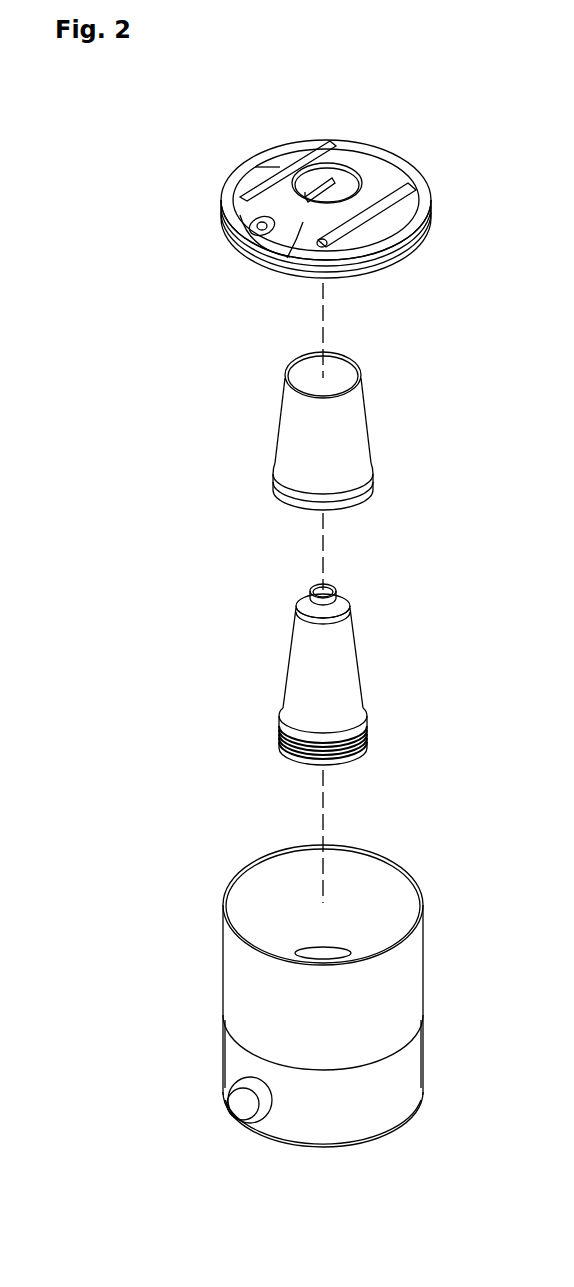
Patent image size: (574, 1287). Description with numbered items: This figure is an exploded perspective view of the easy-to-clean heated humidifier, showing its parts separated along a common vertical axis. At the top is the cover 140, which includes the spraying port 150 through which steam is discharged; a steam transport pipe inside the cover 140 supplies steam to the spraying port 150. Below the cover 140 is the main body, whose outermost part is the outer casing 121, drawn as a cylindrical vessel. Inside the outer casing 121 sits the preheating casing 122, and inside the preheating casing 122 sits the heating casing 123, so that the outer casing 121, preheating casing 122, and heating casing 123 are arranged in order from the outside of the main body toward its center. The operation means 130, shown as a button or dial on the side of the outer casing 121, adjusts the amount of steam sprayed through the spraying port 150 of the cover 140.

The cover 140 is at (252, 165).
The spraying port 150 is at (250, 228).
The preheating casing 122 is at (257, 420).
The heating casing 123 is at (258, 656).
The outer casing 121 is at (212, 975).
The operation means 130 is at (227, 1100).